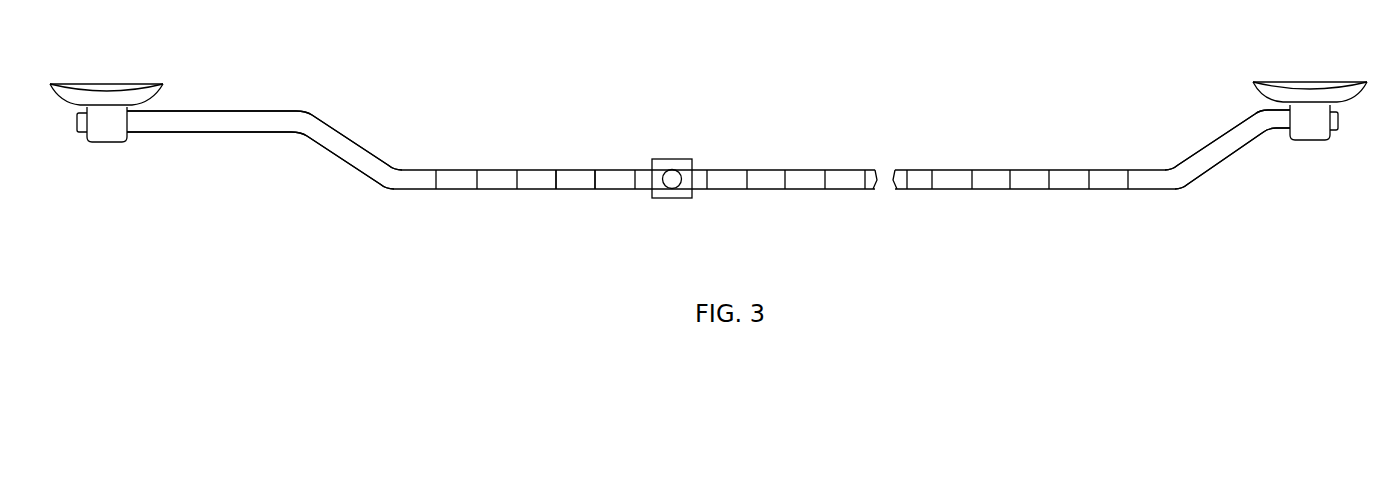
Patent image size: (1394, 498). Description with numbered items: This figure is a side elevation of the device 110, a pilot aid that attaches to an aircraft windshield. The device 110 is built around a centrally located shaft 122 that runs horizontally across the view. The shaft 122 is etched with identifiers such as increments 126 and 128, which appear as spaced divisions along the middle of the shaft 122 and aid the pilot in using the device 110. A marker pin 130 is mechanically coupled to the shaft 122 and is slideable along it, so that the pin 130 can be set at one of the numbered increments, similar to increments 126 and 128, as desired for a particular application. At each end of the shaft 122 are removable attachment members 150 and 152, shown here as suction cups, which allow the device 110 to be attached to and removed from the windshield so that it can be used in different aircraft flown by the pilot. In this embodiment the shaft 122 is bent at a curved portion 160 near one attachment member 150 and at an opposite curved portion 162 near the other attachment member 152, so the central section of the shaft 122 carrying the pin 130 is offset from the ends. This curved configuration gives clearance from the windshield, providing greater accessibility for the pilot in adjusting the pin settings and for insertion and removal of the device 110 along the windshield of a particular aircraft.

The device 110 is at (868, 212).
The shaft 122 is at (422, 170).
The identifier 126 is at (553, 175).
The identifier 128 is at (783, 178).
The marker pin 130 is at (695, 137).
The removable attachment member 150 is at (150, 56).
The removable attachment member 152 is at (1254, 62).
The curved portion 160 is at (340, 150).
The curved portion 162 is at (1215, 153).